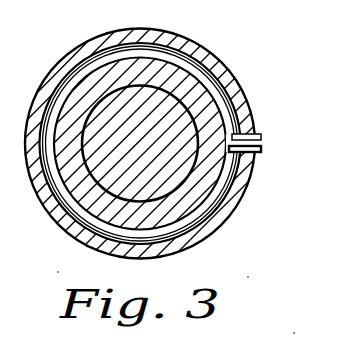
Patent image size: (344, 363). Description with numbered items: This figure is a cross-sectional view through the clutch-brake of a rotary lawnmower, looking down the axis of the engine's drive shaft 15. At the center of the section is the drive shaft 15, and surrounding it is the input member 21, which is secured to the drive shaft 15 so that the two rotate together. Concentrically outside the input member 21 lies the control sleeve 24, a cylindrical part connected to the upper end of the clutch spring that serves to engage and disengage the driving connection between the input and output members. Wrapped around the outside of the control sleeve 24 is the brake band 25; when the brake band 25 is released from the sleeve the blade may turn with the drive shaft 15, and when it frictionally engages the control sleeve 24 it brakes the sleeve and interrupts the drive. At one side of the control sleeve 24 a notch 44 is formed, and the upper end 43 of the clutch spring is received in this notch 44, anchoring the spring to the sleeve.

The drive shaft 15 is at (78, 237).
The input member 21 is at (220, 206).
The control sleeve 24 is at (212, 63).
The brake band 25 is at (219, 100).
The upper end of the clutch spring 43 is at (260, 137).
The notch 44 is at (262, 150).